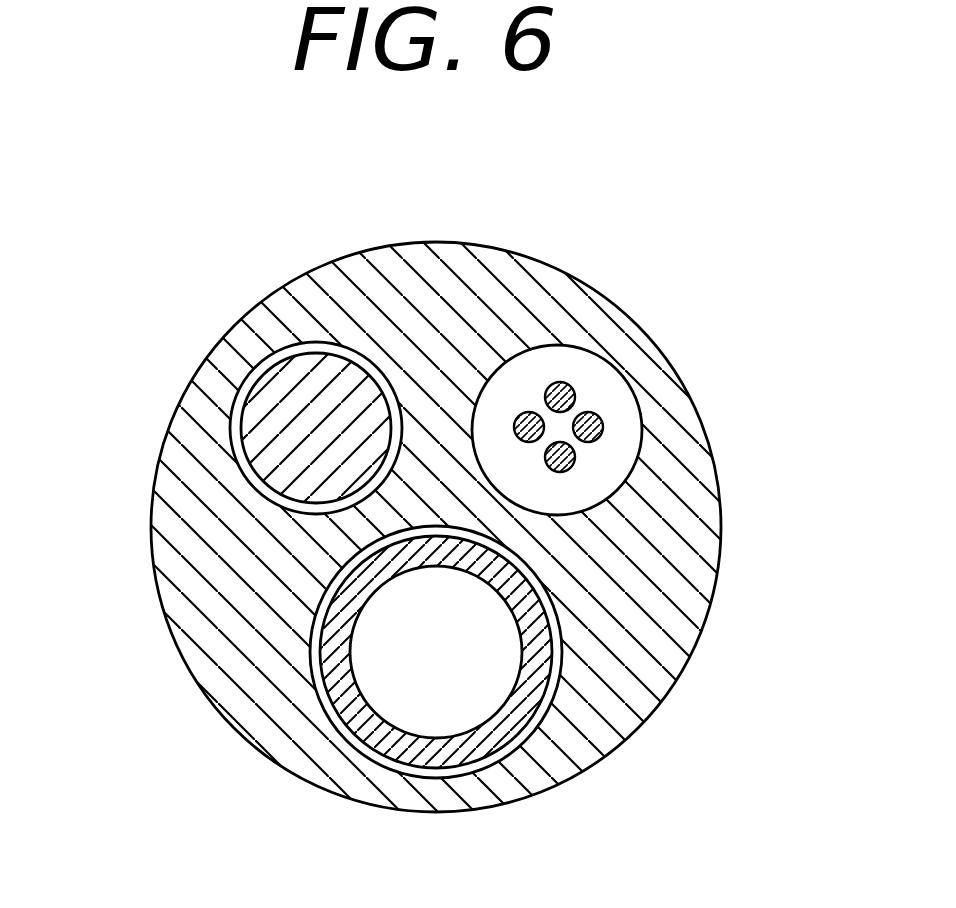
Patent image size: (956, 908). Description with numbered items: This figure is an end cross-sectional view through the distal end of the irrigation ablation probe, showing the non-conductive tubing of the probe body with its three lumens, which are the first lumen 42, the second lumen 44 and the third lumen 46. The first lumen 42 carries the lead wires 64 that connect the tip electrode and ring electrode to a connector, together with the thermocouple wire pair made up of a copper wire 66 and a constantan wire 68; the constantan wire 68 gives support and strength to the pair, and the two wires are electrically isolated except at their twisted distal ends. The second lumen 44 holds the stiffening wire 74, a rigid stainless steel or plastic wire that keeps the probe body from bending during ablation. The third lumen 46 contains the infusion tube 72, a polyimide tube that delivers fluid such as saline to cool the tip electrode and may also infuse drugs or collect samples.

The stiffening wire 74 is at (373, 476).
The second lumen 44 is at (288, 438).
The first lumen 42 is at (600, 453).
The lead wires 64 is at (529, 412).
The copper wire 66 is at (601, 424).
The constantan wire 68 is at (563, 470).
The third lumen 46 is at (350, 750).
The infusion tube 72 is at (517, 717).